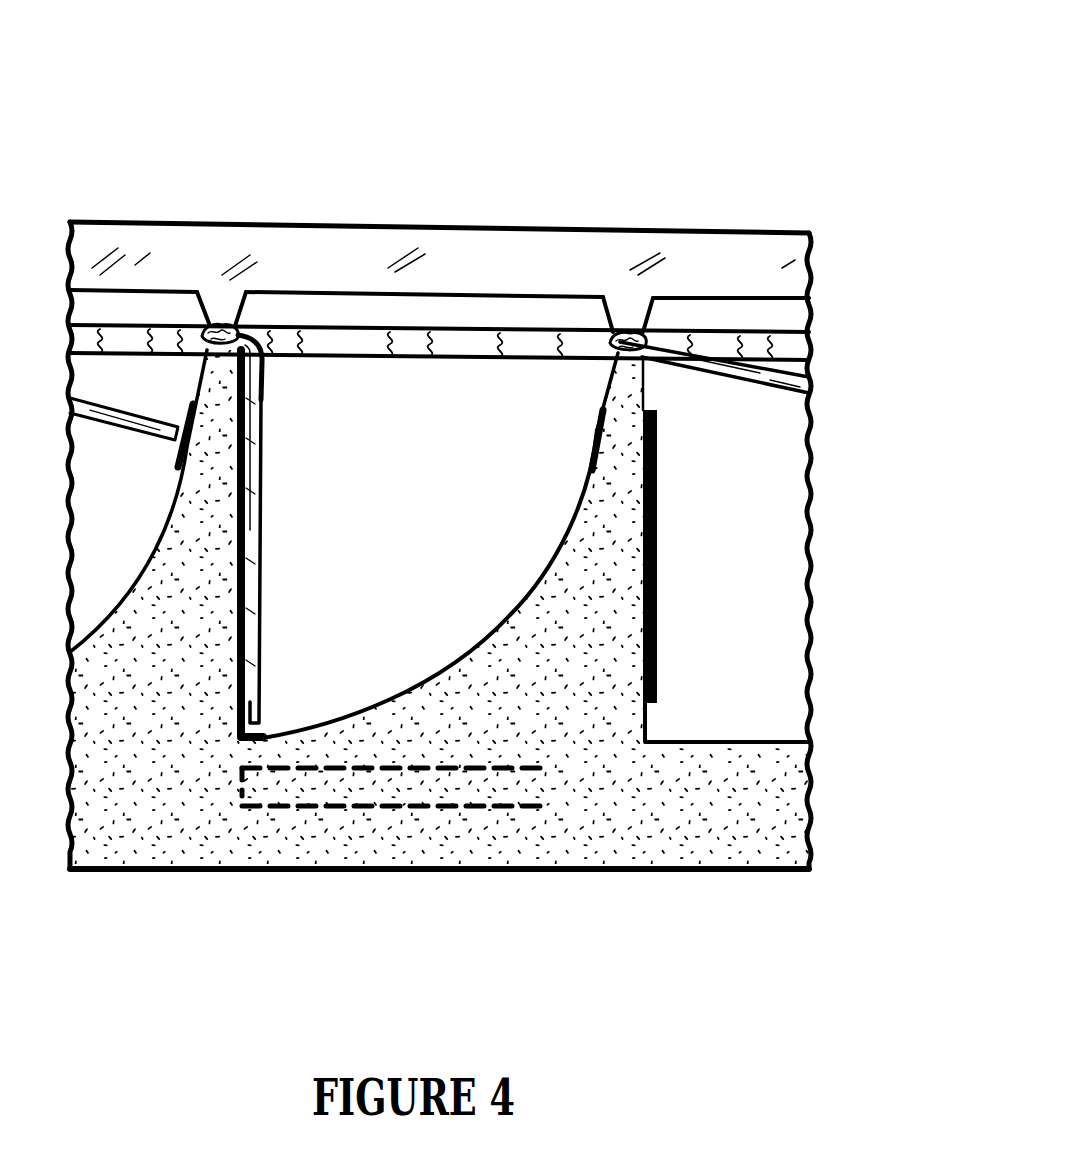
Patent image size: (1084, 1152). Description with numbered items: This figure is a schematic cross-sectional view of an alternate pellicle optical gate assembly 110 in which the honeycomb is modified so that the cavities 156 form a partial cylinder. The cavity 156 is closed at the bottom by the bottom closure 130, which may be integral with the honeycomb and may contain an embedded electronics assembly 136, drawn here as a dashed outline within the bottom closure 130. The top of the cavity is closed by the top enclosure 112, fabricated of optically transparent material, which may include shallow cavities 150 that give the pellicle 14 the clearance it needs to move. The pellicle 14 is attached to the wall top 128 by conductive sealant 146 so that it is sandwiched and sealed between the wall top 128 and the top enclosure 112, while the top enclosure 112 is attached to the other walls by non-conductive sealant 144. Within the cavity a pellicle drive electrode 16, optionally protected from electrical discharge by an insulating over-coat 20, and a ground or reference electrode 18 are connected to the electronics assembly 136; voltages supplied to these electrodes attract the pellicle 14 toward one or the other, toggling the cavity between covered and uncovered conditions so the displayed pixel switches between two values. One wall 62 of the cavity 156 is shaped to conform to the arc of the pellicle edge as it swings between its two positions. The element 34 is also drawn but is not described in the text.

The assembly of pellicle optical gates 110 is at (201, 114).
The top enclosure 112 is at (167, 222).
The shallow cavities 150 is at (325, 303).
The wall top 128 is at (607, 388).
The conductive sealant 146 is at (665, 336).
The non-conductive sealant 144 is at (808, 353).
The clip bar 34 is at (185, 410).
The pellicle 14 is at (135, 425).
The pellicle drive electrode 16 is at (250, 477).
The insulating over-coat 20 is at (259, 587).
The ground or reference electrode 18 is at (593, 437).
The wall 62 is at (508, 615).
The cavities 156 is at (385, 660).
The electronics assembly 136 is at (343, 797).
The bottom closure 130 is at (753, 840).